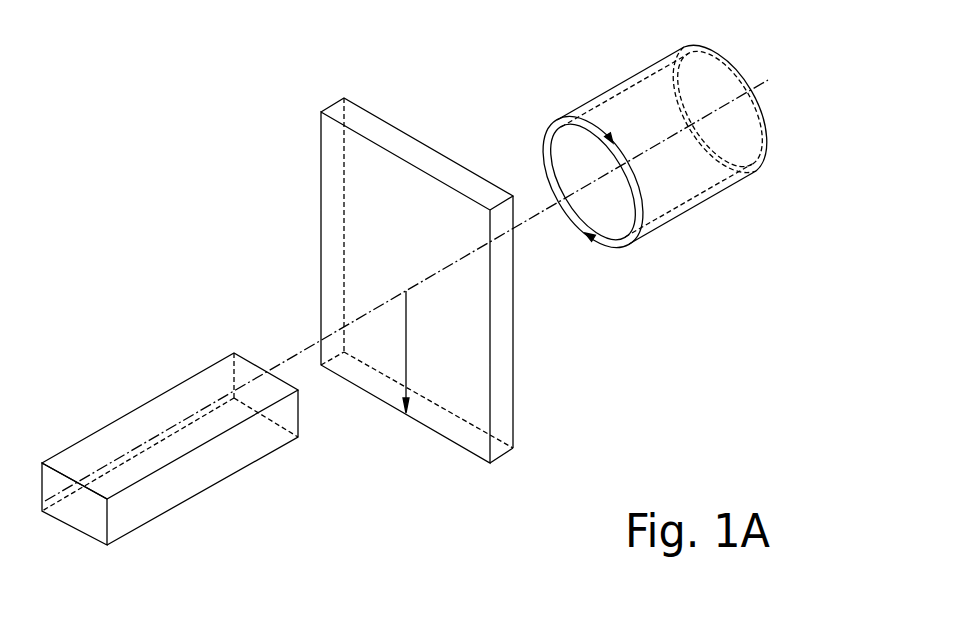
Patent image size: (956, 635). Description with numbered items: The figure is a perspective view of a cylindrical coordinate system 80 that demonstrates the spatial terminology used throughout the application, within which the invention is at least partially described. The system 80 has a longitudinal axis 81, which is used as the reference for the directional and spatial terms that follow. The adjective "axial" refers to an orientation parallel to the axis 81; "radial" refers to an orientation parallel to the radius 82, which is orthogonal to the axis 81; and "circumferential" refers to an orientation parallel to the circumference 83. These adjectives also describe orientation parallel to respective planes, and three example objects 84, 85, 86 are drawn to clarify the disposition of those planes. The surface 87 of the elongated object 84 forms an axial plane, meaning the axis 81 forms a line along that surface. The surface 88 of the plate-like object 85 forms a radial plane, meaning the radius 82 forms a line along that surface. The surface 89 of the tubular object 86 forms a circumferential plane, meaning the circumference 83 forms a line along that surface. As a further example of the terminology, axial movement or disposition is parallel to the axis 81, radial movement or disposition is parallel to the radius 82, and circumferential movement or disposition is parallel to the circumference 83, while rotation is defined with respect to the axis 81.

The cylindrical coordinate system 80 is at (280, 159).
The longitudinal axis 81 is at (757, 82).
The radius 82 is at (406, 345).
The circumference 83 is at (543, 143).
The object 84 is at (170, 479).
The object 85 is at (419, 301).
The object 86 is at (614, 152).
The surface 87 is at (130, 428).
The surface 88 is at (337, 238).
The surface 89 is at (623, 80).